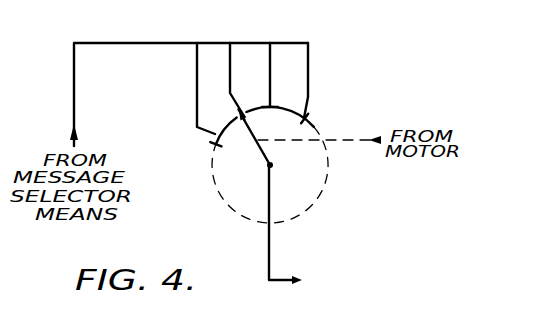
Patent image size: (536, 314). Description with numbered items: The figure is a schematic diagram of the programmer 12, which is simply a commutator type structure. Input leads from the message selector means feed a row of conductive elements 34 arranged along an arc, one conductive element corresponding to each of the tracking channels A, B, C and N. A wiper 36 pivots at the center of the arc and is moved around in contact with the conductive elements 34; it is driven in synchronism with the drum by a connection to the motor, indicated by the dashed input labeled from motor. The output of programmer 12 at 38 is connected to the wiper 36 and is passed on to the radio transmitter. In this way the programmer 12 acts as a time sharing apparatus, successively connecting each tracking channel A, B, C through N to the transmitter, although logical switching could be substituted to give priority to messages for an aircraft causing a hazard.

The programmer 12 is at (349, 66).
The conductive elements 34 is at (310, 114).
The wiper 36 is at (248, 138).
The output of programmer 38 is at (270, 228).
The tracking channel N is at (210, 140).
The tracking channel A is at (233, 112).
The tracking channel B is at (265, 104).
The tracking channel C is at (301, 108).